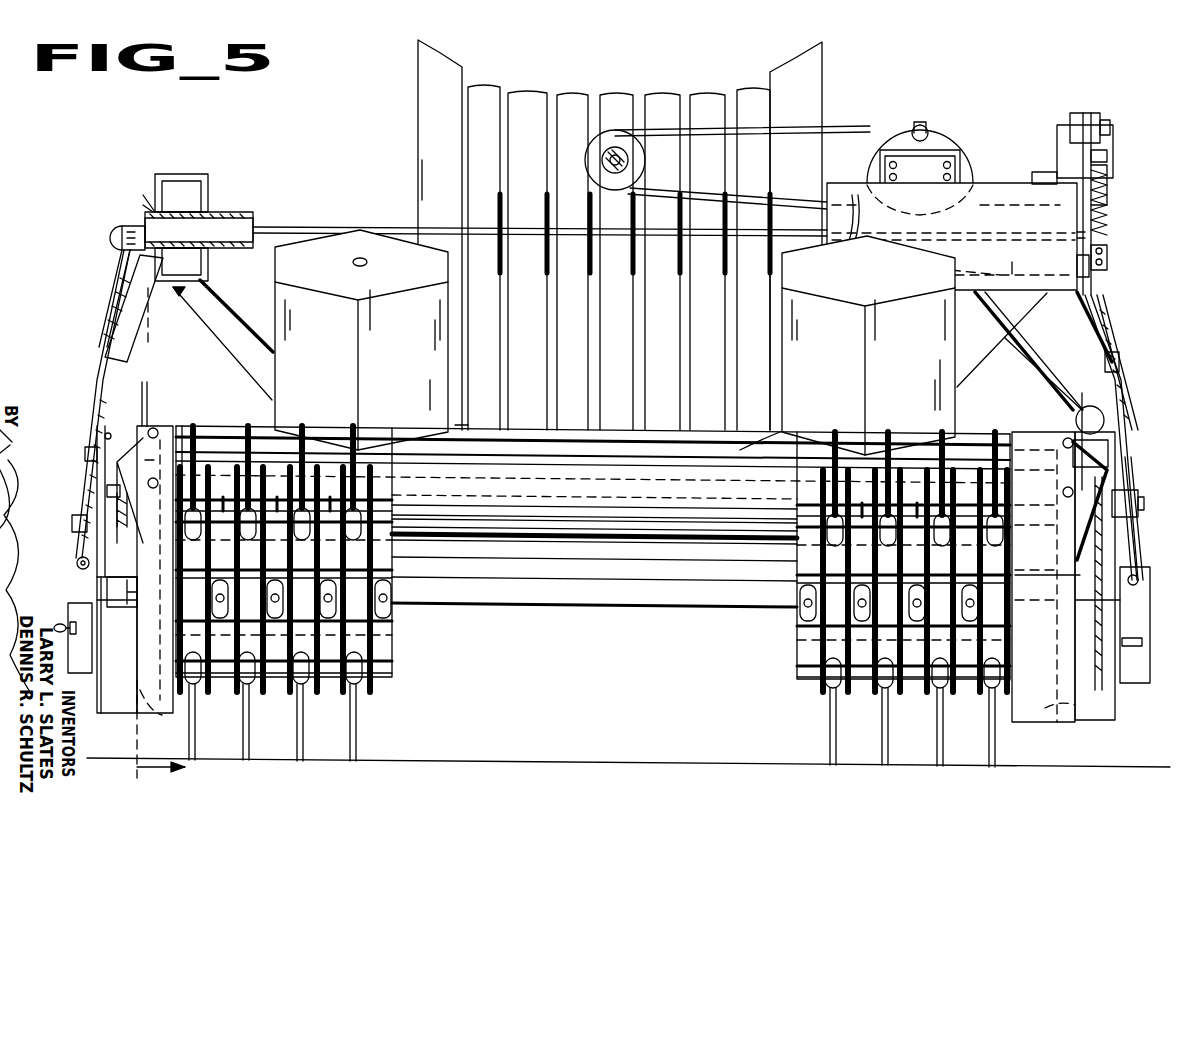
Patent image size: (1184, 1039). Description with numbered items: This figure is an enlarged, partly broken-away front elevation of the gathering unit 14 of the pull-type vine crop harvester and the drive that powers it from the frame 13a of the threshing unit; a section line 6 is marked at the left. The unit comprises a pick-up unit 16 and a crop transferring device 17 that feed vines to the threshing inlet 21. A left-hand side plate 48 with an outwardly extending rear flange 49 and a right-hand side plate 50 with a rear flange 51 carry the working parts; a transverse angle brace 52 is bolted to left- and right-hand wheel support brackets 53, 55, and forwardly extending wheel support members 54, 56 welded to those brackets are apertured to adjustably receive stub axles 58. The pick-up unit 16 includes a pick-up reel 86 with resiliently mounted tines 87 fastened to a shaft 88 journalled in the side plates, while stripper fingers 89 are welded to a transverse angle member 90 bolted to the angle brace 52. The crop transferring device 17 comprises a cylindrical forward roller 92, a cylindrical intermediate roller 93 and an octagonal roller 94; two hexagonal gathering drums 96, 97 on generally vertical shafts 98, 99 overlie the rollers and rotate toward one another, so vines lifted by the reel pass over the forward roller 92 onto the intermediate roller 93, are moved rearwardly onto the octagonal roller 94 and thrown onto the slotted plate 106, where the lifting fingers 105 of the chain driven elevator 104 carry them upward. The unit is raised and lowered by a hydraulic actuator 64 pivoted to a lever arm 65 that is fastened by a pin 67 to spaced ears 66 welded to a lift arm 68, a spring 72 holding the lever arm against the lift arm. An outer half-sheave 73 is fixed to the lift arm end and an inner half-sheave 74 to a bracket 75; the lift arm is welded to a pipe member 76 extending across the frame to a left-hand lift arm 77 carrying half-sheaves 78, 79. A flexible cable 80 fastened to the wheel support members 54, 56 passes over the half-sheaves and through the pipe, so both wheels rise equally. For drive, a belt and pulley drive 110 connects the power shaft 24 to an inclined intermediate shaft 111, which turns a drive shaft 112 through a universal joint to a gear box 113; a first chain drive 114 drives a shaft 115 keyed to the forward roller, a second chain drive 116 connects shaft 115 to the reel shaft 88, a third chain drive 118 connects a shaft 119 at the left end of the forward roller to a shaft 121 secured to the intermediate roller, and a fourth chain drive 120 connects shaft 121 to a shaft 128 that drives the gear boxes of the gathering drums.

The frame 13a is at (190, 172).
The section line 6- 6 is at (204, 541).
The gathering unit 14 is at (1008, 746).
The pick-up unit 16 is at (373, 694).
The crop transferring device 17 is at (472, 543).
The inlet 21 is at (490, 327).
The power shaft 24 is at (600, 160).
The left-hand side plate 48 is at (156, 588).
The rear flange 49 is at (111, 664).
The right-hand side plate 50 is at (1051, 597).
The rear flange 51 is at (1100, 715).
The transverse angle brace 52 is at (580, 570).
The left-hand wheel support bracket 53 is at (108, 580).
The wheel support member 54 is at (97, 675).
The right-hand wheel support bracket 55 is at (1047, 578).
The wheel support member 56 is at (1125, 635).
The stub axle 58 is at (62, 625).
The hydraulic actuator 64 is at (1057, 150).
The lever arm 65 is at (1088, 113).
The spaced ears 66 is at (1085, 208).
The pin 67 is at (1108, 160).
The lift arm 68 is at (1105, 300).
The spring 72 is at (1105, 232).
The outer half-sheave 73 is at (1100, 350).
The inner half-sheave 74 is at (1110, 255).
The bracket 75 is at (1080, 262).
The pipe member 76 is at (230, 212).
The left-hand lift arm 77 is at (140, 355).
The half-sheave 78 is at (100, 333).
The half-sheave 79 is at (118, 238).
The flexible cable 80 is at (290, 227).
The pick-up reel 86 is at (392, 668).
The tines 87 is at (350, 760).
The shaft 88 is at (115, 592).
The stripper fingers 89 is at (245, 690).
The transverse angle member 90 is at (636, 596).
The cylindrical forward roller 92 is at (712, 528).
The cylindrical intermediate roller 93 is at (740, 450).
The octagonal roller 94 is at (468, 428).
The hexagonal gathering drum 96 is at (361, 340).
The hexagonal gathering drum 97 is at (868, 345).
The vertical shaft 98 is at (352, 264).
The vertical shaft 99 is at (876, 270).
The chain driven elevator 104 is at (488, 200).
The elevator fingers 105 is at (725, 278).
The slotted plate 106 is at (610, 92).
The belt and pulley drive 110 is at (830, 128).
The inclined intermediate shaft 111 is at (922, 122).
The drive shaft 112 is at (1050, 368).
The gear box 113 is at (1108, 440).
The first chain drive 114 is at (1160, 458).
The shaft 115 is at (1160, 512).
The second chain drive 116 is at (1100, 545).
The third chain drive 118 is at (148, 425).
The shaft 119 is at (107, 493).
The fourth chain drive 120 is at (97, 455).
The shaft 121 is at (106, 436).
The shaft 128 is at (72, 523).